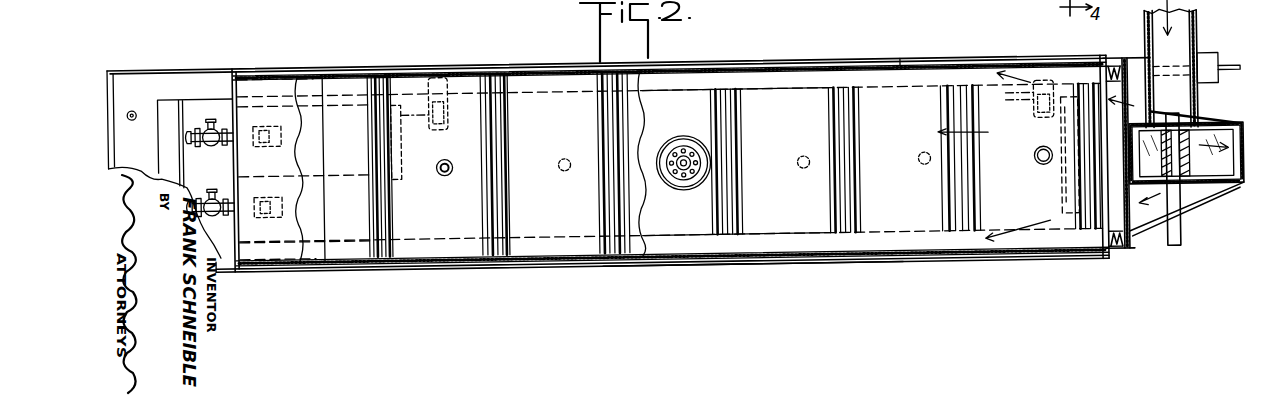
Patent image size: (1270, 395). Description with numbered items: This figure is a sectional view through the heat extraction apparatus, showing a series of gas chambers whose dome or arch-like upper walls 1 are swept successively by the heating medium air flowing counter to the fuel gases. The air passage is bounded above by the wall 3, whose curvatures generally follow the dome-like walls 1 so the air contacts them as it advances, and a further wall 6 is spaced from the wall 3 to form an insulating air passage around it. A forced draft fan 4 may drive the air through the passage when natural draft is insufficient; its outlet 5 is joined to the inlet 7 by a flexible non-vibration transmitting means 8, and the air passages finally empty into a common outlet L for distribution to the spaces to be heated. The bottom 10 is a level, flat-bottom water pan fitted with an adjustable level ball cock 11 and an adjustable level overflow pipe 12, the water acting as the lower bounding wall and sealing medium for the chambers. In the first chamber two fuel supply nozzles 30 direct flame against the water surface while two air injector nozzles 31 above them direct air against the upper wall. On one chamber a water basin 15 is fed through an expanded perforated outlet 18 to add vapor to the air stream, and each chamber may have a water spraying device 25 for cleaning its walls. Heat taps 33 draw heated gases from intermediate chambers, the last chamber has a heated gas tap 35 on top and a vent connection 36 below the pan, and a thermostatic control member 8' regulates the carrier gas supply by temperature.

The dome or arch-like upper walls 1 is at (775, 109).
The wall 3 is at (355, 94).
The forced draft fan 4 is at (1225, 165).
The outlet 5 is at (1130, 220).
The wall 6 is at (275, 96).
The inlet 7 is at (1112, 103).
The flexible non-vibration transmitting means 8 is at (1134, 145).
The thermostatic control member 8' is at (722, 123).
The bottom 10 is at (740, 276).
The adjustable level ball cock 11 is at (1230, 83).
The adjustable level overflow pipe 12 is at (133, 110).
The water basin 15 is at (706, 148).
The expanded perforated outlet 18 is at (680, 185).
The water spraying device 25 is at (558, 164).
The fuel supply nozzles 30 is at (205, 195).
The air injector nozzles 31 is at (268, 150).
The heat taps 33 is at (436, 176).
The heated gas tap 35 is at (1033, 165).
The vent connection 36 is at (1060, 197).
The common outlet L is at (232, 108).